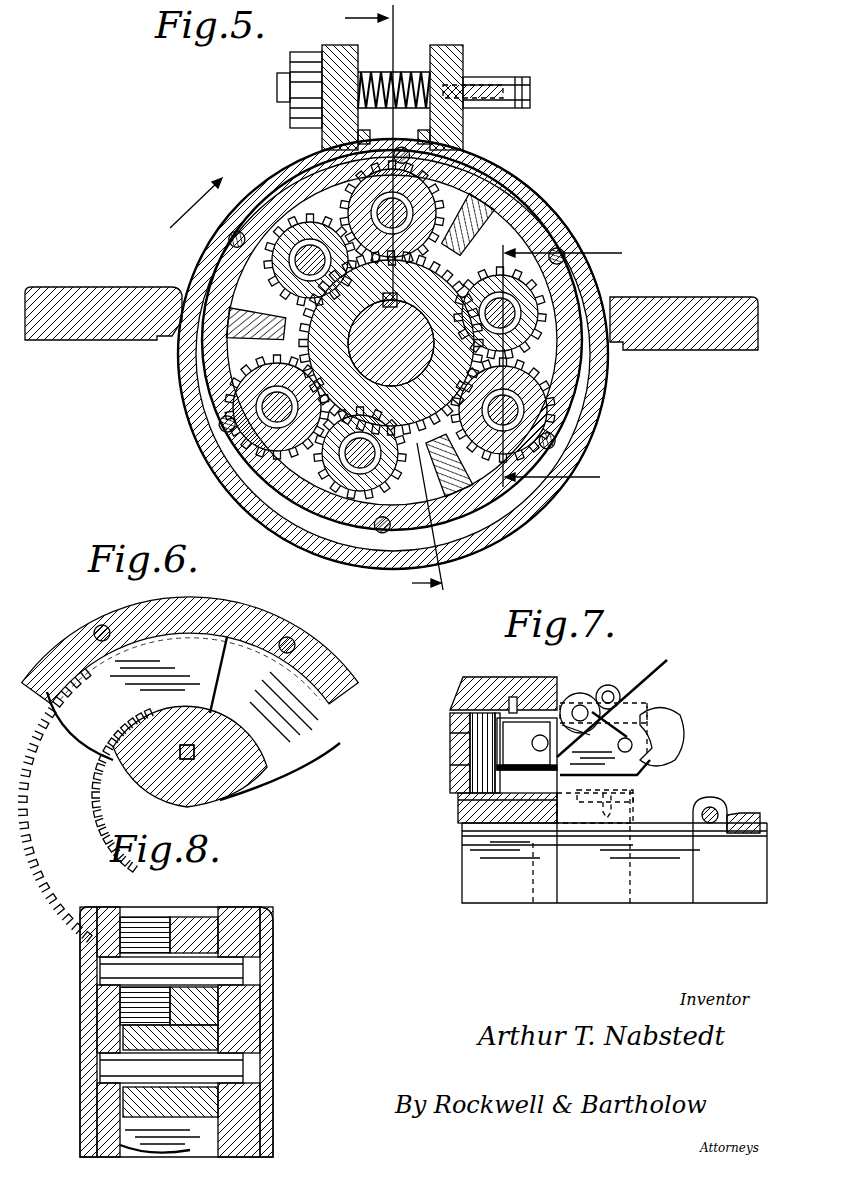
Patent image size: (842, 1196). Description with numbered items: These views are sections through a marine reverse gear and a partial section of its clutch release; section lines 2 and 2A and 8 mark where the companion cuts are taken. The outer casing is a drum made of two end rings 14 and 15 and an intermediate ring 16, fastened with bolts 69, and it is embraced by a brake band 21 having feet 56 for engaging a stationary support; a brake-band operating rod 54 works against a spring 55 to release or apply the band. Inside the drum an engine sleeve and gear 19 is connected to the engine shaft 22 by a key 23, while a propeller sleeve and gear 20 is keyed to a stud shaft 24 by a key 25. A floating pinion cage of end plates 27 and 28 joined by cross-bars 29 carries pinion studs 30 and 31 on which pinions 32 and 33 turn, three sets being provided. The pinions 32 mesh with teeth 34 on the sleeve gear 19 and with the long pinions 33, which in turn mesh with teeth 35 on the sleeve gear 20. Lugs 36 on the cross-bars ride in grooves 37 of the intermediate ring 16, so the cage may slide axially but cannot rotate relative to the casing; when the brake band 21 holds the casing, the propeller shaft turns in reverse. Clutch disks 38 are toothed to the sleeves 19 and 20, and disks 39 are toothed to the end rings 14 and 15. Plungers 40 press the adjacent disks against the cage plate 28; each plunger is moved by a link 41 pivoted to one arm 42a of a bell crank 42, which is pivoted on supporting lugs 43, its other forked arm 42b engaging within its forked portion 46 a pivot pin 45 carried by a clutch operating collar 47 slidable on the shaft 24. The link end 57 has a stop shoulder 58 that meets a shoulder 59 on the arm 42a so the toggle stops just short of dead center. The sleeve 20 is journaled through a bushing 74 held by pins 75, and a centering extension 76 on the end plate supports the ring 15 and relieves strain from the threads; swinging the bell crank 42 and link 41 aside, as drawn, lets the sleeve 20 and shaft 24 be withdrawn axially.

In FIG. 5, the section line 2- 2 is at (385, 300).
In FIG. 5, the section line 2A is at (196, 203).
In FIG. 5, the section line 8- 8 is at (571, 366).
In FIG. 6, the end ring 14 is at (214, 615).
In FIG. 7, the end ring 15 is at (466, 677).
In FIG. 5, the intermediate ring 16 is at (335, 195).
In FIG. 5, the engine sleeve and gear 19 is at (497, 305).
In FIG. 6, the engine sleeve and gear 19 is at (135, 762).
In FIG. 5, the propeller sleeve and gear 20 is at (384, 400).
In FIG. 7, the propeller sleeve and gear 20 is at (472, 818).
In FIG. 8, the propeller sleeve and gear 20 is at (150, 935).
In FIG. 5, the brake band 21 is at (556, 205).
In FIG. 6, the engine shaft 22 is at (225, 790).
In FIG. 6, the key 23 is at (180, 760).
In FIG. 5, the stud shaft 24 is at (415, 345).
In FIG. 7, the stud shaft 24 is at (599, 877).
In FIG. 7, the key 25 is at (470, 832).
In FIG. 5, the cage end plate 27 is at (255, 490).
In FIG. 8, the cage end plate 27 is at (235, 933).
In FIG. 7, the cage end plate 28 is at (452, 727).
In FIG. 8, the cage end plate 28 is at (105, 1030).
In FIG. 5, the cross-bar 29 is at (512, 200).
In FIG. 8, the cross-bar 29 is at (105, 1130).
In FIG. 5, the pinion stud 30 is at (305, 262).
In FIG. 8, the pinion stud 30 is at (230, 970).
In FIG. 5, the pinion stud 31 is at (447, 155).
In FIG. 8, the pinion stud 31 is at (230, 1068).
In FIG. 5, the pinion 32 is at (275, 250).
In FIG. 8, the pinion 32 is at (200, 935).
In FIG. 5, the pinion 33 is at (322, 150).
In FIG. 8, the pinion 33 is at (200, 1102).
In FIG. 5, the teeth 34 is at (365, 262).
In FIG. 5, the teeth 35 is at (350, 452).
In FIG. 7, the teeth 35 is at (465, 800).
In FIG. 5, the lug 36 is at (500, 228).
In FIG. 5, the groove 37 is at (540, 175).
In FIG. 6, the clutch disk 38 is at (313, 748).
In FIG. 7, the clutch disk 38 is at (470, 745).
In FIG. 8, the clutch disk 38 is at (262, 993).
In FIG. 6, the clutch disk 39 is at (123, 710).
In FIG. 7, the clutch disk 39 is at (472, 775).
In FIG. 8, the clutch disk 39 is at (250, 1025).
In FIG. 7, the plunger 40 is at (520, 735).
In FIG. 7, the link 41 is at (553, 718).
In FIG. 7, the bell crank 42 is at (648, 702).
In FIG. 7, the arm of bell crank 42a is at (620, 670).
In FIG. 7, the arm of bell crank 42b is at (633, 742).
In FIG. 7, the supporting lug 43 is at (645, 765).
In FIG. 7, the pivot pin 45 is at (712, 807).
In FIG. 7, the forked portion 46 is at (680, 725).
In FIG. 7, the clutch operating collar 47 is at (747, 813).
In FIG. 5, the brake-band operating rod 54 is at (480, 82).
In FIG. 5, the spring 55 is at (400, 68).
In FIG. 5, the foot 56 is at (100, 332).
In FIG. 7, the end of link 57 is at (583, 695).
In FIG. 7, the stop shoulder 58 is at (608, 686).
In FIG. 7, the shoulder 59 is at (622, 690).
In FIG. 5, the bolt 69 is at (494, 178).
In FIG. 6, the bolt 69 is at (100, 626).
In FIG. 7, the bushing 74 is at (505, 815).
In FIG. 7, the pin 75 is at (535, 812).
In FIG. 7, the centering extension 76 is at (511, 697).